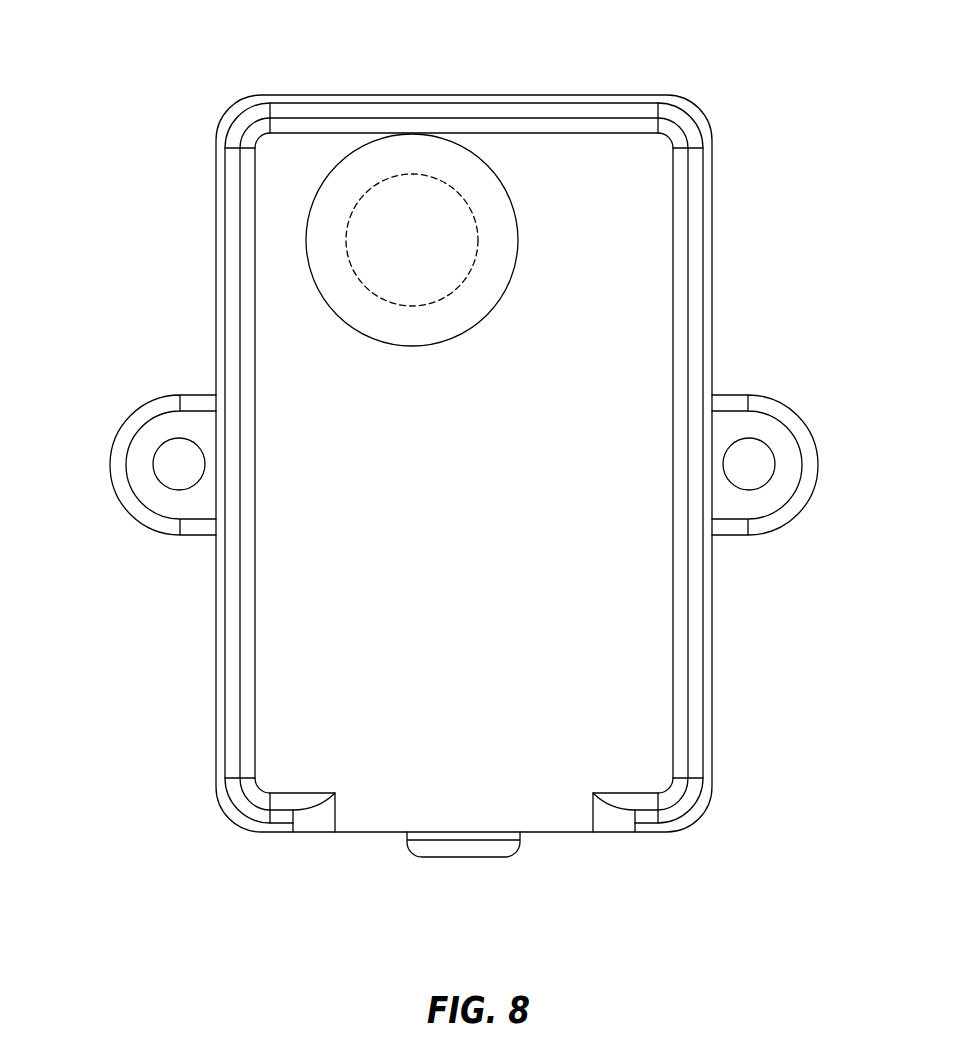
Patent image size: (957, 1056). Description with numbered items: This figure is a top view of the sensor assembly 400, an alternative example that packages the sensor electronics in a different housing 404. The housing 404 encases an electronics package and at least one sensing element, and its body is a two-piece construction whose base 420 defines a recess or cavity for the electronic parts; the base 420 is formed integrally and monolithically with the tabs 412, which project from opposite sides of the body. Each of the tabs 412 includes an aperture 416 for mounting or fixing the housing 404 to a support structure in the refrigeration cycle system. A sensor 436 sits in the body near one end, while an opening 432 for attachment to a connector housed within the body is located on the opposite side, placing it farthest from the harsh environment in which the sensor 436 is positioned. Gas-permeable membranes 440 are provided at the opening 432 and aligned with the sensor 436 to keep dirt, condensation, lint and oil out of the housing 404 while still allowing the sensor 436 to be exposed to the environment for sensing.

The sensor assembly 400 is at (465, 492).
The housing 404 is at (697, 98).
The tabs 412 is at (118, 470).
The apertures 416 is at (178, 453).
The base 420 is at (673, 812).
The opening 432 is at (463, 886).
The sensor 436 is at (403, 200).
The membranes 440 is at (420, 494).